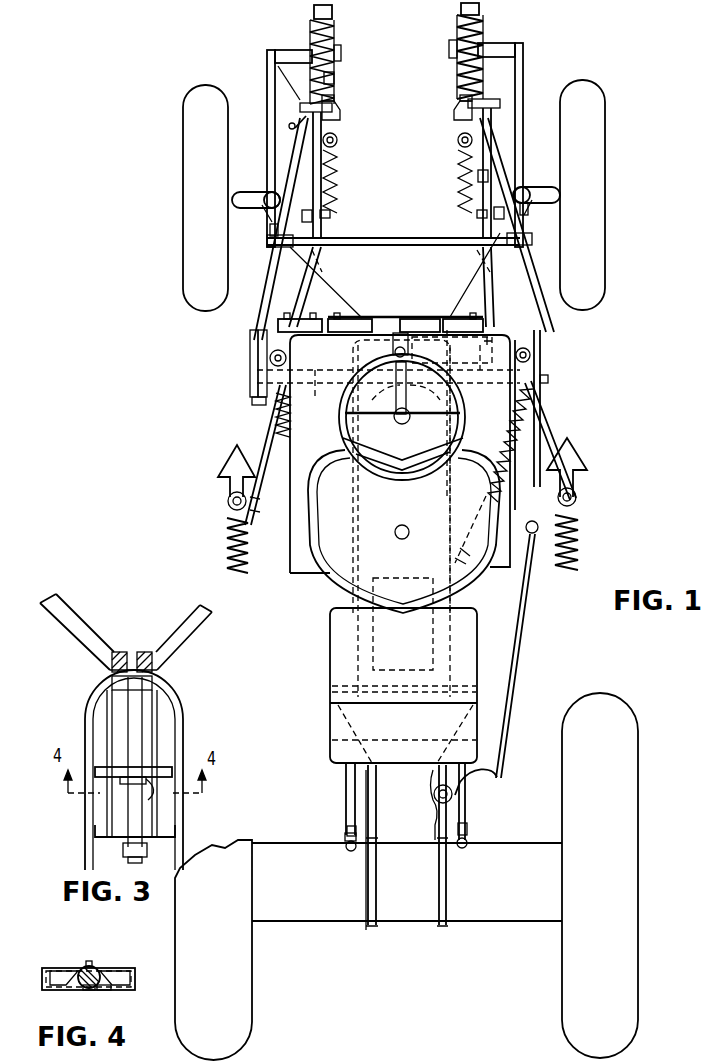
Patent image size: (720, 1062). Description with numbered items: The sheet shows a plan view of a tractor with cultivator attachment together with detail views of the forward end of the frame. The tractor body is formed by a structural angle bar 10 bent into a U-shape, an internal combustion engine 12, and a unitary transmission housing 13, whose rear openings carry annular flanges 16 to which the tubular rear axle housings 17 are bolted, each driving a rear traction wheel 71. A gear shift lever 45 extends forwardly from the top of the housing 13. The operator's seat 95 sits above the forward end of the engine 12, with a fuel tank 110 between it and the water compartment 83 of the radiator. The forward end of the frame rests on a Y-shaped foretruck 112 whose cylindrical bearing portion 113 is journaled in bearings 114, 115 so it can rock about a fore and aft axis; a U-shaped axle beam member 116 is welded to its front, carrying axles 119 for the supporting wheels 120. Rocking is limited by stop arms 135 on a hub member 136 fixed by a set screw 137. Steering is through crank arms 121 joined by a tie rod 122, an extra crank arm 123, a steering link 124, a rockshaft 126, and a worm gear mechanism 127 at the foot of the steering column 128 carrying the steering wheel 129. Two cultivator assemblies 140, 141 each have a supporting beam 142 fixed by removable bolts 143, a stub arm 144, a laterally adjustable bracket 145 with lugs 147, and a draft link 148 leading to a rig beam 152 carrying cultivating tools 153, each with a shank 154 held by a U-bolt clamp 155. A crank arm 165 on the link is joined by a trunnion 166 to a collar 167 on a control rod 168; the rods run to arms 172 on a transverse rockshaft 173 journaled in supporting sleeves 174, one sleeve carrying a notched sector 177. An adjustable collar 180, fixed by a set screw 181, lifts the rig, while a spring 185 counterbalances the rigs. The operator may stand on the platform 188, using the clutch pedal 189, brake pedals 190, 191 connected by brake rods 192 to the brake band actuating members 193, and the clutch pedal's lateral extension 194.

In FIG. 3, the structural angle bar 10 is at (172, 713).
In FIG. 4, the structural angle bar 10 is at (136, 977).
In FIG. 1, the internal combustion engine 12 is at (375, 630).
In FIG. 1, the transmission housing 13 is at (368, 791).
In FIG. 1, the annular flanges 16 is at (437, 917).
In FIG. 1, the rear axle housings 17 is at (303, 913).
In FIG. 1, the gear shift lever 45 is at (511, 672).
In FIG. 1, the rear traction wheel 71 is at (242, 1023).
In FIG. 1, the water compartment 83 is at (338, 730).
In FIG. 1, the operator's seat 95 is at (350, 573).
In FIG. 1, the fuel tank 110 is at (340, 666).
In FIG. 3, the foretruck 112 is at (73, 661).
In FIG. 3, the bearing portion 113 is at (133, 713).
In FIG. 4, the bearing portion 113 is at (96, 966).
In FIG. 3, the bearing 114 is at (157, 673).
In FIG. 4, the bearing 114 is at (107, 989).
In FIG. 3, the bearing 115 is at (147, 837).
In FIG. 1, the U-shaped axle beam member 116 is at (448, 305).
In FIG. 3, the U-shaped axle beam member 116 is at (78, 632).
In FIG. 1, the axle 119 is at (250, 192).
In FIG. 1, the supporting wheels 120 is at (193, 97).
In FIG. 1, the crank arms 121 is at (270, 231).
In FIG. 1, the tie rod 122 is at (380, 242).
In FIG. 1, the extra crank arm 123 is at (470, 178).
In FIG. 1, the steering link 124 is at (484, 272).
In FIG. 1, the rockshaft 126 is at (455, 347).
In FIG. 1, the worm gear mechanism 127 is at (402, 333).
In FIG. 1, the steering column 128 is at (402, 408).
In FIG. 1, the steering wheel 129 is at (465, 416).
In FIG. 3, the stop arms 135 is at (107, 770).
In FIG. 4, the stop arms 135 is at (60, 970).
In FIG. 3, the hub member 136 is at (120, 755).
In FIG. 4, the hub member 136 is at (87, 989).
In FIG. 3, the set screw 137 is at (150, 787).
In FIG. 4, the set screw 137 is at (90, 961).
In FIG. 1, the cultivator assembly 140 is at (352, 52).
In FIG. 1, the cultivator assembly 141 is at (432, 66).
In FIG. 1, the supporting beam 142 is at (272, 103).
In FIG. 1, the removable bolts 143 is at (309, 218).
In FIG. 1, the stub arm 144 is at (288, 57).
In FIG. 1, the cultivator supporting bracket 145 is at (338, 55).
In FIG. 1, the lugs 147 is at (332, 82).
In FIG. 1, the draft link 148 is at (334, 124).
In FIG. 1, the rig beam 152 is at (272, 430).
In FIG. 1, the cultivating tools 153 is at (216, 506).
In FIG. 1, the shank 154 is at (232, 512).
In FIG. 1, the U-bolt clamp 155 is at (232, 500).
In FIG. 1, the crank arm 165 is at (332, 98).
In FIG. 1, the trunnion 166 is at (336, 106).
In FIG. 1, the collar 167 is at (297, 100).
In FIG. 1, the control rod 168 is at (267, 285).
In FIG. 1, the arms 172 is at (255, 385).
In FIG. 1, the rockshaft 173 is at (406, 388).
In FIG. 1, the supporting sleeves 174 is at (388, 415).
In FIG. 1, the notched sector 177 is at (548, 352).
In FIG. 1, the collar 180 is at (297, 130).
In FIG. 1, the set screw 181 is at (289, 125).
In FIG. 1, the spring 185 is at (478, 493).
In FIG. 1, the platform 188 is at (300, 493).
In FIG. 1, the clutch pedal 189 is at (355, 320).
In FIG. 1, the brake pedal 190 is at (296, 325).
In FIG. 1, the brake pedal 191 is at (455, 300).
In FIG. 1, the brake rods 192 is at (343, 772).
In FIG. 1, the brake band actuating members 193 is at (347, 831).
In FIG. 1, the lateral extension 194 is at (413, 320).